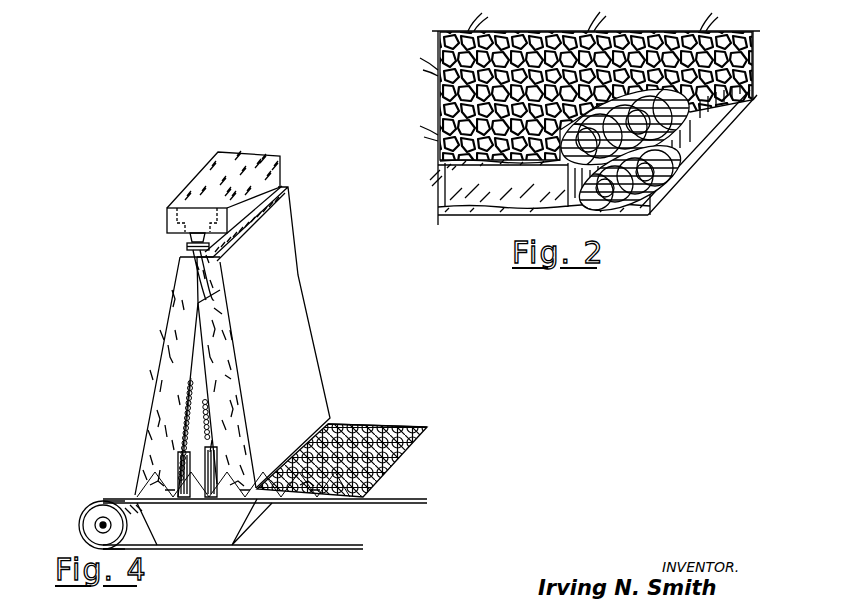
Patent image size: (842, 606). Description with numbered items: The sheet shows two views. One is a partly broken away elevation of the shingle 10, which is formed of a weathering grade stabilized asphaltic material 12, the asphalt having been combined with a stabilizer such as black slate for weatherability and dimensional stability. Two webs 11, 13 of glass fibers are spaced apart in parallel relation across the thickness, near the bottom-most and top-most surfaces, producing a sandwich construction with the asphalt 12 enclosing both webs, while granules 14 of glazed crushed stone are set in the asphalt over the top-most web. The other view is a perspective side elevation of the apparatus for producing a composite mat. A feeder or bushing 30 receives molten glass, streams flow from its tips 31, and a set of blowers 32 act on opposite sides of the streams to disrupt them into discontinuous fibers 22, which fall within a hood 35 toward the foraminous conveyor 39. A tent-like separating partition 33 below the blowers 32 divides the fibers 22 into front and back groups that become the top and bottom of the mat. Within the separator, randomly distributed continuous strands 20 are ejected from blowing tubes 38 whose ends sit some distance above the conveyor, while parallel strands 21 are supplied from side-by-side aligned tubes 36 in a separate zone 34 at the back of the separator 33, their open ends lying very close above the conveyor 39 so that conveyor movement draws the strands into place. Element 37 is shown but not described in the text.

In FIG. 2, the shingle 10 is at (428, 93).
In FIG. 2, the web of glass fibers 11 is at (692, 117).
In FIG. 2, the stabilized asphaltic material 12 is at (470, 192).
In FIG. 2, the web of glass fibers 13 is at (668, 187).
In FIG. 2, the granules 14 is at (442, 148).
In FIG. 4, the randomly distributed continuous glass strands 20 is at (410, 427).
In FIG. 4, the parallel strands 21 is at (330, 427).
In FIG. 4, the discontinuous fibers 22 is at (193, 282).
In FIG. 4, the feeder or bushing 30 is at (190, 233).
In FIG. 4, the tips 31 is at (197, 240).
In FIG. 4, the blowers 32 is at (197, 247).
In FIG. 4, the separating partition 33 is at (200, 340).
In FIG. 4, the separate zone 34 is at (190, 333).
In FIG. 4, the hood 35 is at (310, 294).
In FIG. 4, the tubes 36 is at (190, 380).
In FIG. 4, the bead chain 37 is at (205, 430).
In FIG. 4, the blowing tubes 38 is at (207, 448).
In FIG. 4, the conveyor 39 is at (130, 497).